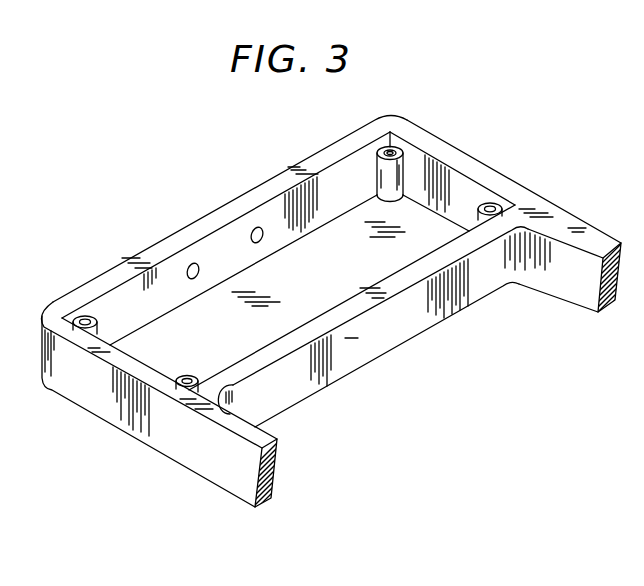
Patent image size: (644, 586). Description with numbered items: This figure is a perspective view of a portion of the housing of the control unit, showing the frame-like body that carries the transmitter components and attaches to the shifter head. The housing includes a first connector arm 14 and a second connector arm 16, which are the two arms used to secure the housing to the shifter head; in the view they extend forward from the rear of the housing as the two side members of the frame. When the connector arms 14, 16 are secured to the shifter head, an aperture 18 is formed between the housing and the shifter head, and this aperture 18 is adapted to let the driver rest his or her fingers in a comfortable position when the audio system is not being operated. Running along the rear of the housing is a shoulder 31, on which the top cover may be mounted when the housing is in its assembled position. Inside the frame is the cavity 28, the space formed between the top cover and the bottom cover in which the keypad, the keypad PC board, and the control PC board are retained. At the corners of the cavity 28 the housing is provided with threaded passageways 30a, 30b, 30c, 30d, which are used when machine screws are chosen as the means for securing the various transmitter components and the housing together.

The first connector arm 14 is at (585, 237).
The second connector arm 16 is at (263, 436).
The aperture 18 is at (458, 387).
The cavity 28 is at (324, 290).
The threaded passageway 30a is at (387, 146).
The threaded passageway 30b is at (80, 318).
The threaded passageway 30c is at (186, 378).
The threaded passageway 30d is at (495, 203).
The shoulder 31 is at (220, 208).